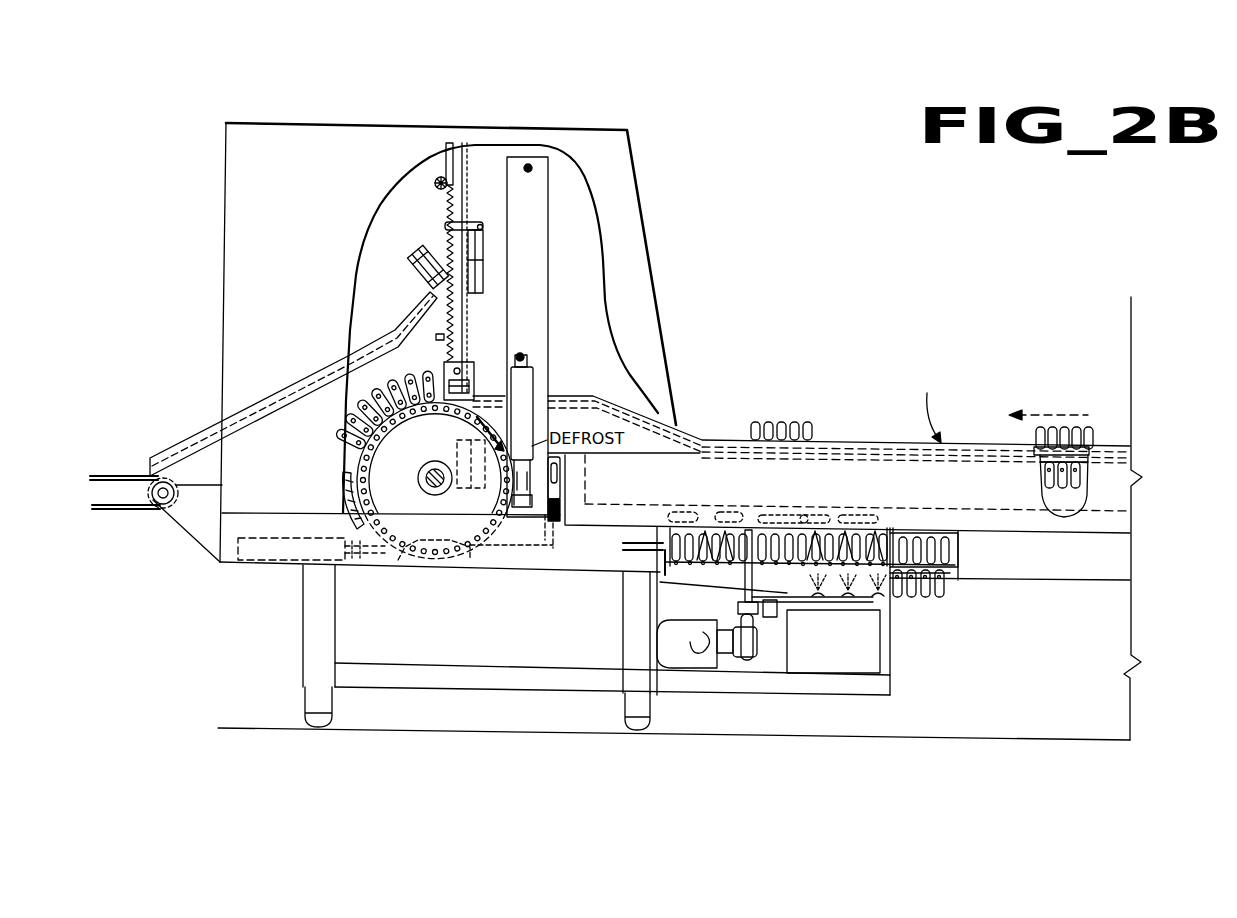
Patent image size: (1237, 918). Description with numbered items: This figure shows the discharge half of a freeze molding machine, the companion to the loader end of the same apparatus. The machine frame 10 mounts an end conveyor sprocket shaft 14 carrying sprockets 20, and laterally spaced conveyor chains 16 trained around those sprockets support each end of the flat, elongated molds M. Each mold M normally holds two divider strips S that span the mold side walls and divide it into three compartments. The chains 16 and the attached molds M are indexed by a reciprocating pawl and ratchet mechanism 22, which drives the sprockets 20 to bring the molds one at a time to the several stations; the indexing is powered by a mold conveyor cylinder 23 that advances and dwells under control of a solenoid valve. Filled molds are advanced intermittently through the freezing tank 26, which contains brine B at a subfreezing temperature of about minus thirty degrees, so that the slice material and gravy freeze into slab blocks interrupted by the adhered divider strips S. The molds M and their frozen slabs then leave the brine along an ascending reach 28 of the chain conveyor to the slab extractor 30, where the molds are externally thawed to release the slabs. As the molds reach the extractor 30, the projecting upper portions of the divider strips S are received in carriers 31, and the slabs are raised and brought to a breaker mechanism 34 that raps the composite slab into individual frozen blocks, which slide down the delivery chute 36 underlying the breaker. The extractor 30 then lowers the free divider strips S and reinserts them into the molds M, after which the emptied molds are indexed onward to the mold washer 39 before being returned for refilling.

The machine frame 10 is at (220, 536).
The conveyor sprocket shaft 14 is at (418, 477).
The conveyor chains 16 is at (348, 437).
The sprockets 20 is at (446, 441).
The pawl and ratchet mechanism 22 is at (446, 568).
The mold conveyor cylinder 23 is at (287, 562).
The freezing tank 26 is at (903, 494).
The ascending reach 28 is at (666, 412).
The slab extractor 30 is at (448, 290).
The carriers 31 is at (462, 376).
The breaker mechanism 34 is at (486, 270).
The delivery chute 36 is at (352, 327).
The mold washer 39 is at (870, 600).
The divider strips S is at (357, 411).
The molds M is at (1048, 483).
The brine B is at (1077, 496).